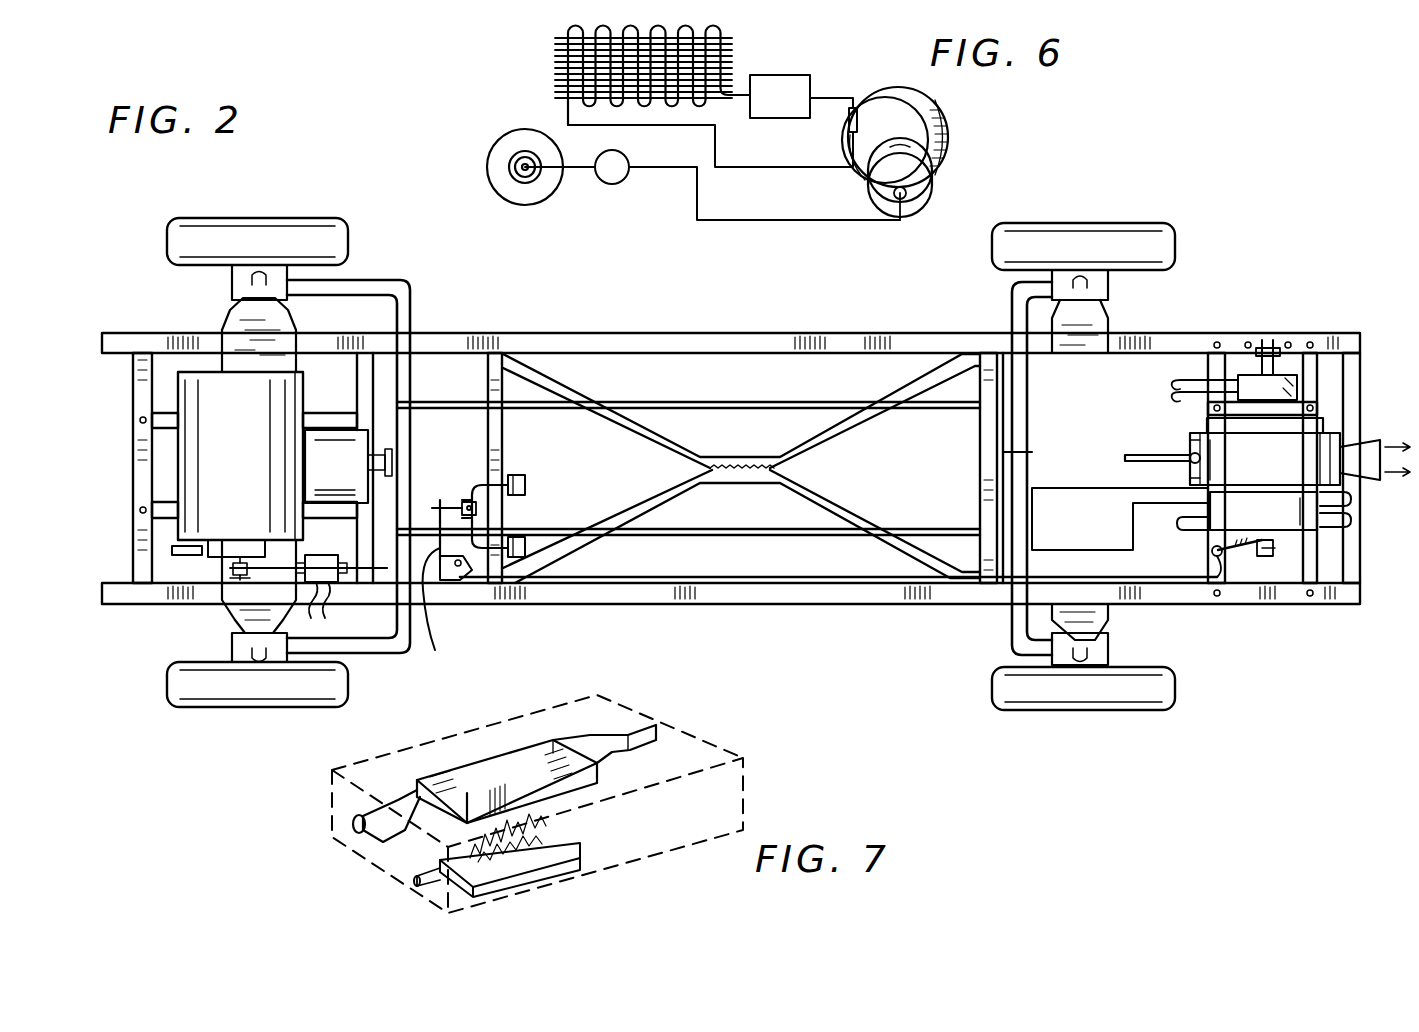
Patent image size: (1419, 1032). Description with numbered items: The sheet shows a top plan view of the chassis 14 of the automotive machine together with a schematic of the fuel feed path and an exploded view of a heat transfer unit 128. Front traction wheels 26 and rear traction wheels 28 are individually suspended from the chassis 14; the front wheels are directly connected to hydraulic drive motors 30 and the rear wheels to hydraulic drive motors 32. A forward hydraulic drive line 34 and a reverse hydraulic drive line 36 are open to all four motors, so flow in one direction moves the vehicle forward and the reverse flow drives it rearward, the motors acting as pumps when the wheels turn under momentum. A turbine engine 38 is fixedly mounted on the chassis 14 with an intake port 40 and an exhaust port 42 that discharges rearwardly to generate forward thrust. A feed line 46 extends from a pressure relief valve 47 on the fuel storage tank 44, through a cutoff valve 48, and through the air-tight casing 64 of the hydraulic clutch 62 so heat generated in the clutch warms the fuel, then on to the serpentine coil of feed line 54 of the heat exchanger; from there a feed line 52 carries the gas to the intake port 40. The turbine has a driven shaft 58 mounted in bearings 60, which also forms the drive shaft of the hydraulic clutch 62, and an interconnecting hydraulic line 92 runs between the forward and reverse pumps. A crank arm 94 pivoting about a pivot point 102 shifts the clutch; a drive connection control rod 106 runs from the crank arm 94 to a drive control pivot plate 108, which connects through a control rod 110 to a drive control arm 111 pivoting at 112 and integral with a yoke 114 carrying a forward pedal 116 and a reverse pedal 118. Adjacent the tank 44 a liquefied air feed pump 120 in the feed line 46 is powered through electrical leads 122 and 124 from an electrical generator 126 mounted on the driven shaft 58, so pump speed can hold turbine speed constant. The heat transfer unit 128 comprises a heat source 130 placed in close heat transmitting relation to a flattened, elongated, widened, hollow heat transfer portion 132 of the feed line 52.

In FIG. 2, the chassis 14 is at (592, 333).
In FIG. 2, the front traction wheels 26 is at (250, 222).
In FIG. 2, the rear traction wheels 28 is at (1128, 223).
In FIG. 2, the hydraulic drive motors 30 is at (237, 281).
In FIG. 2, the hydraulic drive motors 32 is at (1105, 290).
In FIG. 2, the forward hydraulic drive line 34 is at (390, 312).
In FIG. 2, the reverse hydraulic drive line 36 is at (410, 283).
In FIG. 2, the turbine engine 38 is at (1295, 450).
In FIG. 6, the turbine engine 38 is at (915, 107).
In FIG. 2, the intake port 40 is at (1190, 458).
In FIG. 6, the intake port 40 is at (849, 133).
In FIG. 2, the exhaust port 42 is at (1365, 445).
In FIG. 2, the fuel storage tank 44 is at (215, 470).
In FIG. 6, the fuel storage tank 44 is at (520, 128).
In FIG. 2, the feed line 46 is at (392, 580).
In FIG. 6, the feed line 46 is at (685, 167).
In FIG. 2, the pressure relief valve 47 is at (226, 548).
In FIG. 2, the cutoff valve 48 is at (182, 552).
In FIG. 2, the feed line 52 is at (1125, 459).
In FIG. 6, the feed line 52 is at (838, 98).
In FIG. 7, the feed line 52 is at (660, 740).
In FIG. 6, the serpentine coil of feed line 54 is at (570, 30).
In FIG. 2, the driven shaft 58 is at (1273, 352).
In FIG. 6, the driven shaft 58 is at (894, 192).
In FIG. 2, the bearings 60 is at (1263, 348).
In FIG. 2, the hydraulic clutch 62 is at (1352, 504).
In FIG. 2, the casing 64 is at (1205, 533).
In FIG. 6, the casing 64 is at (932, 186).
In FIG. 2, the interconnecting hydraulic line 92 is at (1352, 524).
In FIG. 2, the crank arm 94 is at (1240, 560).
In FIG. 2, the pivot point 102 is at (1225, 566).
In FIG. 2, the drive connection control rod 106 is at (735, 580).
In FIG. 2, the drive control pivot plate 108 is at (455, 585).
In FIG. 2, the control rod 110 is at (439, 608).
In FIG. 2, the drive control arm 111 is at (440, 500).
In FIG. 2, the pivot 112 is at (477, 510).
In FIG. 2, the yoke 114 is at (478, 483).
In FIG. 2, the forward pedal 116 is at (525, 482).
In FIG. 2, the reverse pedal 118 is at (526, 548).
In FIG. 2, the liquefied air feed pump 120 is at (320, 556).
In FIG. 6, the liquefied air feed pump 120 is at (612, 184).
In FIG. 2, the electrical lead 122 is at (328, 587).
In FIG. 2, the electrical lead 124 is at (315, 600).
In FIG. 2, the electrical generator 126 is at (1292, 385).
In FIG. 6, the heat transfer unit 128 is at (785, 85).
In FIG. 7, the heat transfer unit 128 is at (745, 782).
In FIG. 7, the heat source 130 is at (590, 845).
In FIG. 7, the heat transfer portion 132 is at (490, 772).